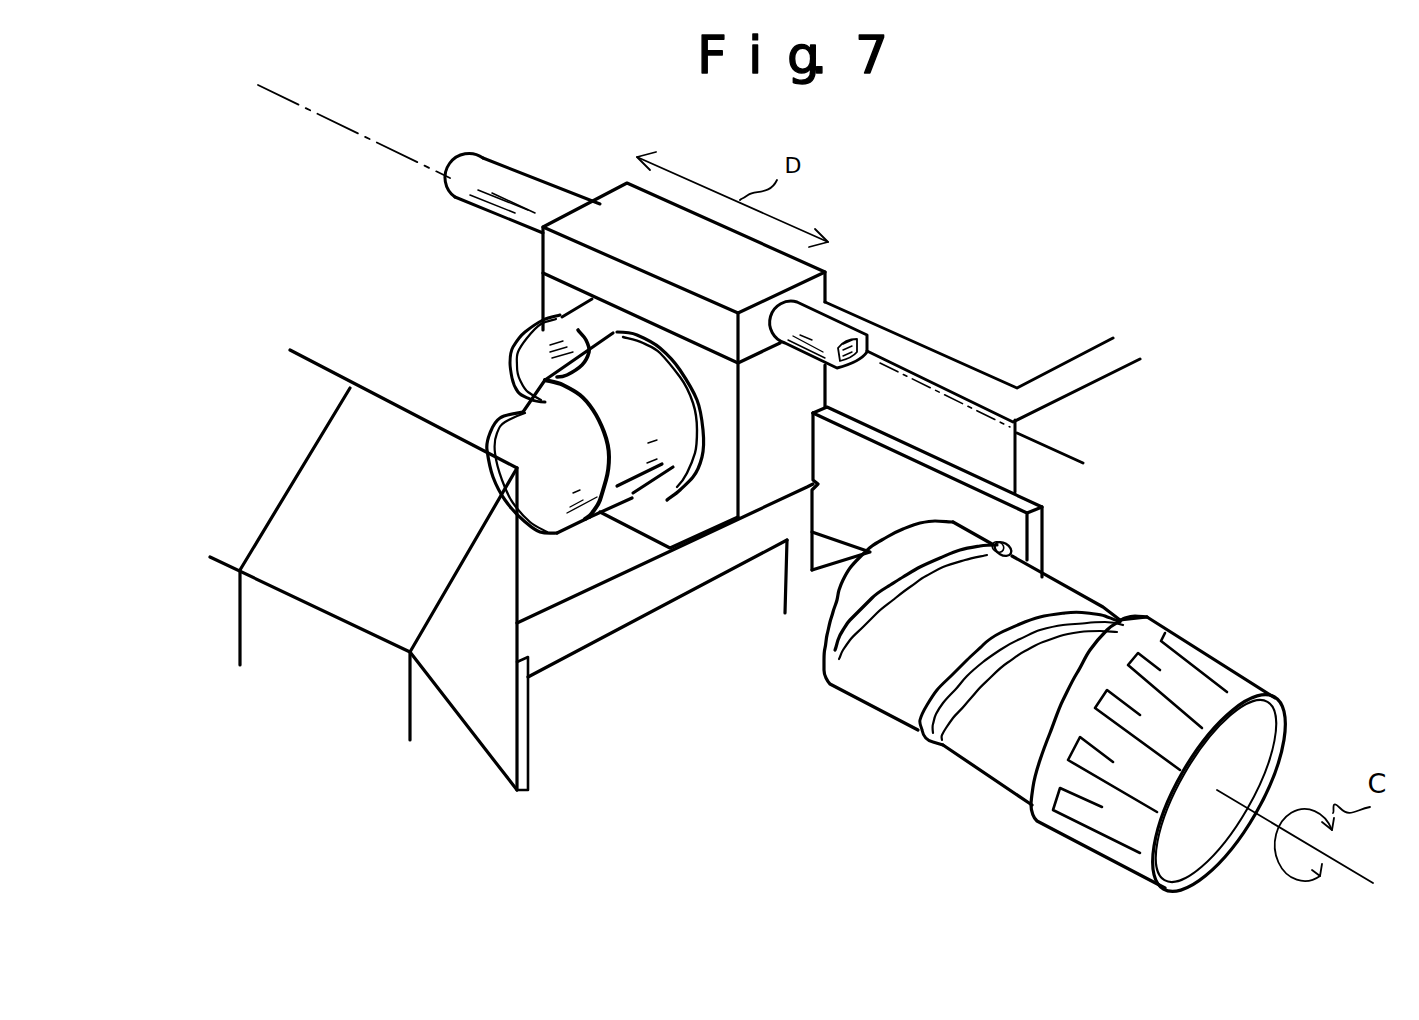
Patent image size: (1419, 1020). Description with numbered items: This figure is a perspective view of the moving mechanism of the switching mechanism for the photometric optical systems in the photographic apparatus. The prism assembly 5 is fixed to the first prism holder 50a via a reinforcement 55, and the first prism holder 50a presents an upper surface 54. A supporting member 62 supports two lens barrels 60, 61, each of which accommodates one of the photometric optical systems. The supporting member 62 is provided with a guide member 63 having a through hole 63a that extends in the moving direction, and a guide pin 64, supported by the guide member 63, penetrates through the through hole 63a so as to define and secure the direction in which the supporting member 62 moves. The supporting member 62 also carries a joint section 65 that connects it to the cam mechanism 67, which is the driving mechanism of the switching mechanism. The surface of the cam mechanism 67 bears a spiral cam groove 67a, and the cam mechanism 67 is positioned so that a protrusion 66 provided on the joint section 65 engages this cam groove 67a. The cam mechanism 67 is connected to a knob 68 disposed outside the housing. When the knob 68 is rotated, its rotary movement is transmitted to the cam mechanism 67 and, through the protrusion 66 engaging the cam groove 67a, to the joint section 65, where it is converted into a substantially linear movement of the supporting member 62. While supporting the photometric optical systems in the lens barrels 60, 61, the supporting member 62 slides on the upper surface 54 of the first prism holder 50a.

The prism assembly 5 is at (385, 680).
The first prism holder 50a is at (667, 590).
The upper surface 54 is at (553, 563).
The reinforcement 55 is at (528, 747).
The lens barrel 60 is at (517, 407).
The lens barrel 61 is at (537, 327).
The supporting member 62 is at (787, 467).
The guide member 63 is at (783, 270).
The through hole 63a is at (806, 297).
The guide pin 64 is at (836, 308).
The joint section 65 is at (895, 477).
The protrusion 66 is at (1015, 543).
The cam mechanism 67 is at (883, 693).
The cam groove 67a is at (930, 723).
The knob 68 is at (1213, 683).